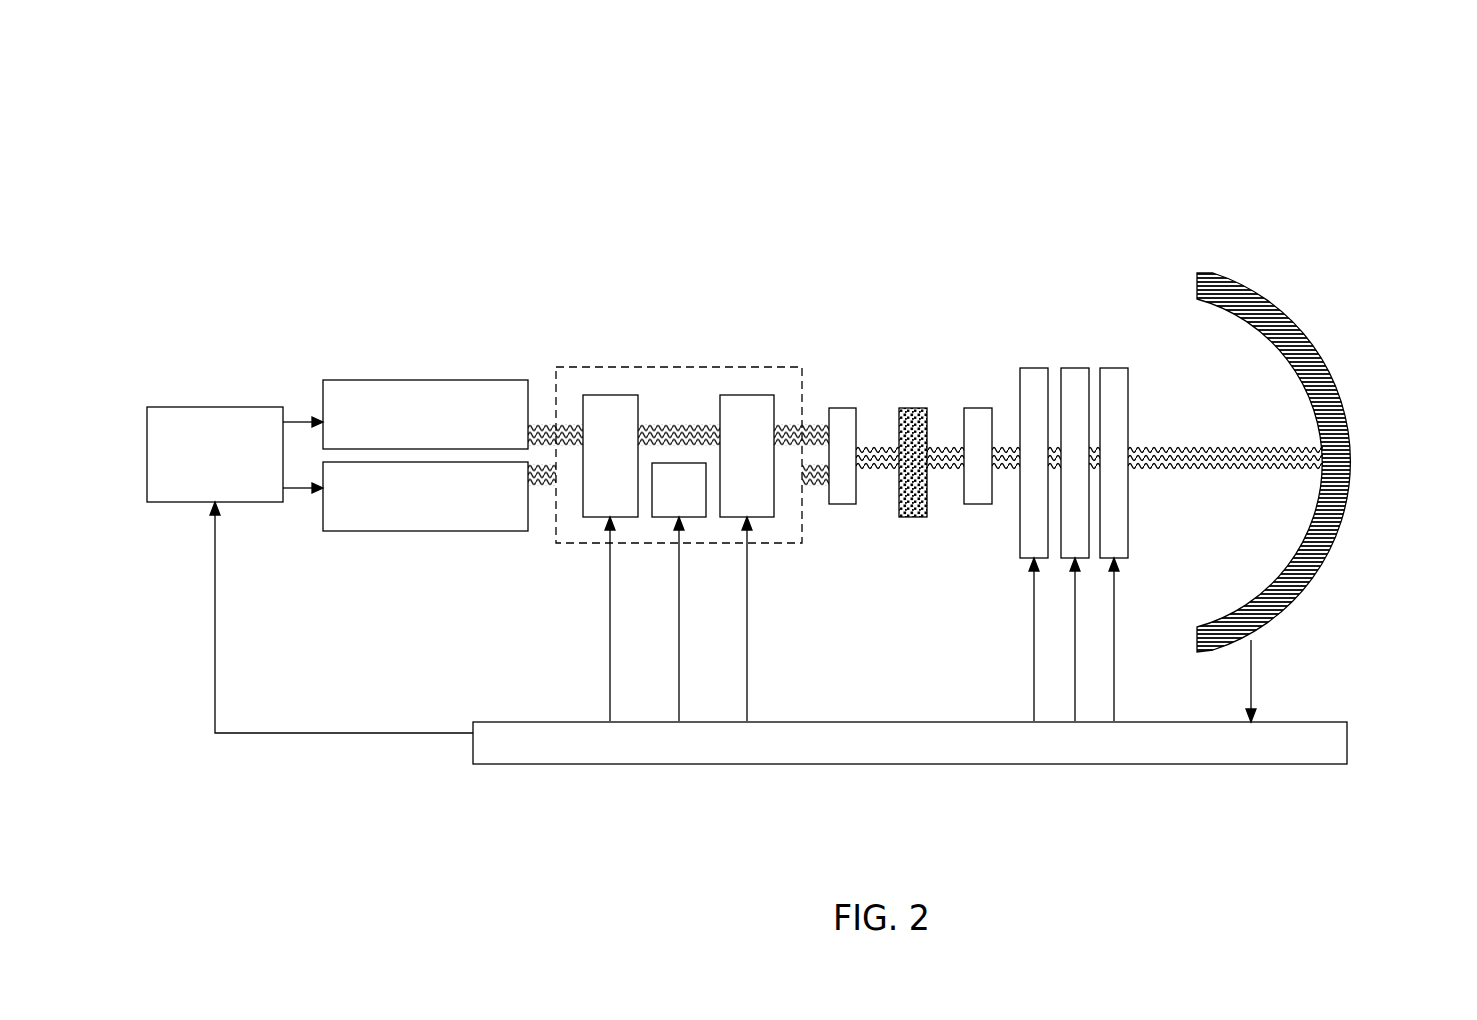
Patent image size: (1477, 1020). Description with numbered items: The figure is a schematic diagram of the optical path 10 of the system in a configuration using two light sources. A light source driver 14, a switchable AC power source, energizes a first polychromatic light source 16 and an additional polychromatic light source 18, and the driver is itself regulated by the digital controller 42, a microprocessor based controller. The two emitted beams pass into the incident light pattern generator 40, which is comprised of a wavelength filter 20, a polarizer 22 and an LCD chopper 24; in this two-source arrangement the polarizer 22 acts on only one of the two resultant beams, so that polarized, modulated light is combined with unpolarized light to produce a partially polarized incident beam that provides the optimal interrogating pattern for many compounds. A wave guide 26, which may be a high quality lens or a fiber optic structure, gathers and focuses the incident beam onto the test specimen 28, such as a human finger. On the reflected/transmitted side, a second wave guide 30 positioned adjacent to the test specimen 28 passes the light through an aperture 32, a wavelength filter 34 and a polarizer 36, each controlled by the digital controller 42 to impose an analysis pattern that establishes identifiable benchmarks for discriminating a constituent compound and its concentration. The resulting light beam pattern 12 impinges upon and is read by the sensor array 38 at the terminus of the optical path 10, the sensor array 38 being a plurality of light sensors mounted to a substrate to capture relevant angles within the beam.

The optical path 10 is at (413, 183).
The light beam pattern 12 is at (1225, 494).
The light source driver 14 is at (238, 350).
The polychromatic light source 16 is at (405, 378).
The polychromatic light source 18 is at (425, 540).
The wavelength filter 20 is at (544, 497).
The polarizer 22 is at (596, 459).
The LCD chopper 24 is at (643, 420).
The wave guide 26 is at (742, 277).
The test specimen 28 is at (912, 322).
The wave guide 30 is at (1060, 278).
The aperture 32 is at (1121, 412).
The wavelength filter 34 is at (1182, 439).
The polarizer 36 is at (1209, 472).
The sensor array 38 is at (1335, 497).
The incident light pattern generator 40 is at (723, 495).
The digital controller 42 is at (793, 675).